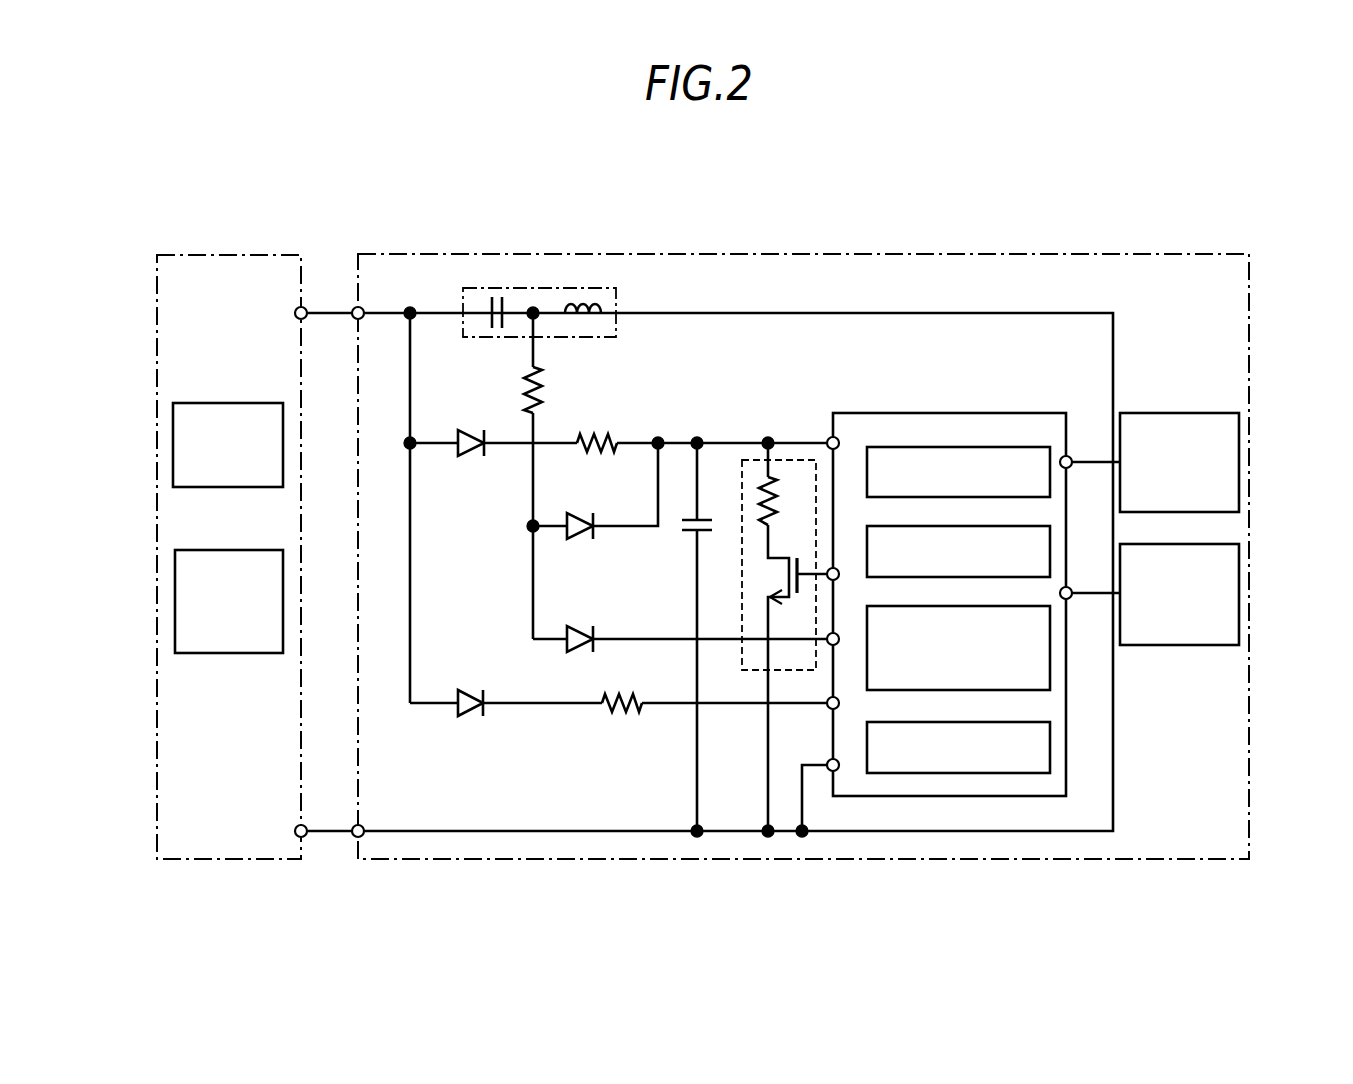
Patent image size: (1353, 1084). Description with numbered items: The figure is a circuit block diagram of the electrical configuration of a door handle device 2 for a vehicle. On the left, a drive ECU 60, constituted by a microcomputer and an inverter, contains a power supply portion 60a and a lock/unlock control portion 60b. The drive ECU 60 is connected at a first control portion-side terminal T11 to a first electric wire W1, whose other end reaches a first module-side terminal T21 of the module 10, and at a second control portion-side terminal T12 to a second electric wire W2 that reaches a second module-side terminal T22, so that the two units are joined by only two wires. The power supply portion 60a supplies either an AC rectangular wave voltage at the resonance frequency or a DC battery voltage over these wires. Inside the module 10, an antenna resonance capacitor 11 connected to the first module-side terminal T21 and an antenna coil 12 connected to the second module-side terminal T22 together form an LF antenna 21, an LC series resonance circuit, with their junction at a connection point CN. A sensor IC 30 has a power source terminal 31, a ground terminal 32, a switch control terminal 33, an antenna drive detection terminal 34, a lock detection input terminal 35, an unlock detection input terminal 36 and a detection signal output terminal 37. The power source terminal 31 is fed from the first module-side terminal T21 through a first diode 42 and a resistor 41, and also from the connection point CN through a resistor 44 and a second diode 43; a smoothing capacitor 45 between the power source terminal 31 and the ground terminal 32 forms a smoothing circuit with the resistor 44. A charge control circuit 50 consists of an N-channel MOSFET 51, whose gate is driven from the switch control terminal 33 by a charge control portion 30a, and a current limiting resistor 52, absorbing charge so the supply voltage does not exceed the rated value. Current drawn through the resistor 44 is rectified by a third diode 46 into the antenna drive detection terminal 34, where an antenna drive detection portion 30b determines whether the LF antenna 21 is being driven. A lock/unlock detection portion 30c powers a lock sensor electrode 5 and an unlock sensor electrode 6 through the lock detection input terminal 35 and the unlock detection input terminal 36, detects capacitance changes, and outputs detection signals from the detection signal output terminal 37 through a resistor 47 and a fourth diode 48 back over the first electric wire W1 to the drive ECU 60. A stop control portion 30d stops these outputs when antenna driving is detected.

The door handle device 2 is at (1143, 254).
The lock sensor electrode 5 is at (1176, 413).
The unlock sensor electrode 6 is at (1178, 647).
The module 10 is at (1084, 295).
The antenna resonance capacitor 11 is at (490, 297).
The antenna coil 12 is at (602, 298).
The LF antenna 21 is at (583, 288).
The connection point CN is at (533, 305).
The sensor IC 30 is at (1048, 402).
The charge control portion 30a is at (971, 447).
The antenna drive detection portion 30b is at (971, 526).
The lock/unlock detection portion 30c is at (971, 606).
The stop control portion 30d is at (971, 722).
The power source terminal 31 is at (840, 440).
The ground terminal 32 is at (840, 759).
The switch control terminal 33 is at (840, 569).
The antenna drive detection terminal 34 is at (840, 633).
The lock detection input terminal 35 is at (1071, 459).
The unlock detection input terminal 36 is at (1071, 598).
The detection signal output terminal 37 is at (840, 697).
The resistor 41 is at (586, 437).
The first diode 42 is at (470, 460).
The second diode 43 is at (584, 520).
The resistor 44 is at (530, 372).
The smoothing capacitor 45 is at (691, 518).
The third diode 46 is at (584, 633).
The resistor 47 is at (624, 713).
The fourth diode 48 is at (470, 698).
The charge control circuit 50 is at (800, 460).
The N-channel MOSFET 51 is at (768, 550).
The current limiting resistor 52 is at (765, 487).
The drive ECU 60 is at (226, 255).
The power supply portion 60a is at (222, 403).
The lock/unlock control portion 60b is at (222, 550).
The first electric wire W1 is at (338, 312).
The second electric wire W2 is at (338, 830).
The first control portion-side terminal T11 is at (307, 319).
The second control portion-side terminal T12 is at (307, 837).
The first module-side terminal T21 is at (364, 306).
The second module-side terminal T22 is at (364, 824).